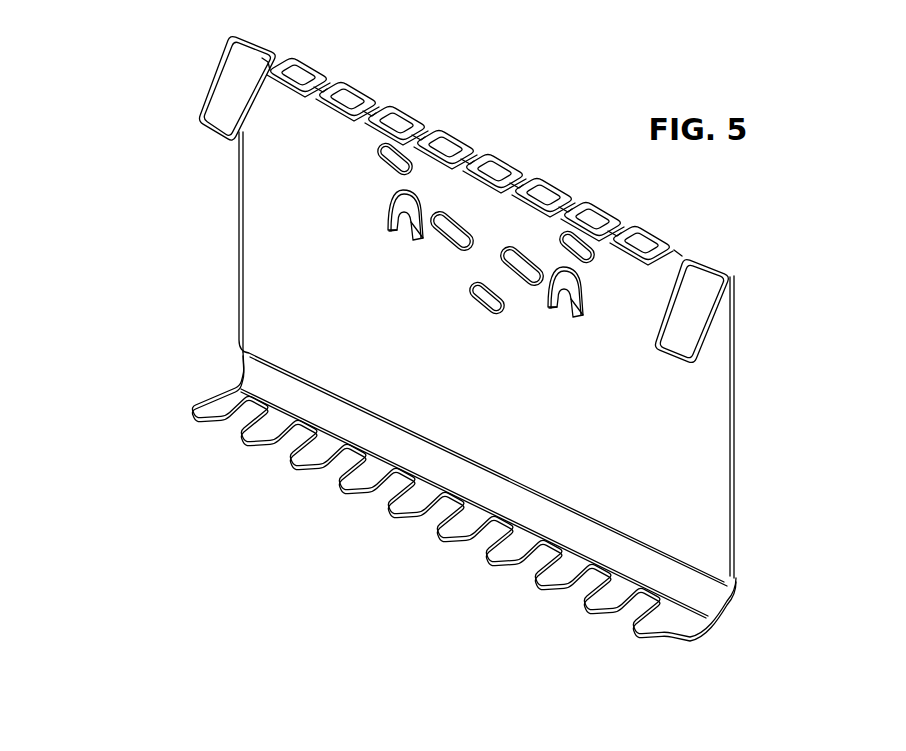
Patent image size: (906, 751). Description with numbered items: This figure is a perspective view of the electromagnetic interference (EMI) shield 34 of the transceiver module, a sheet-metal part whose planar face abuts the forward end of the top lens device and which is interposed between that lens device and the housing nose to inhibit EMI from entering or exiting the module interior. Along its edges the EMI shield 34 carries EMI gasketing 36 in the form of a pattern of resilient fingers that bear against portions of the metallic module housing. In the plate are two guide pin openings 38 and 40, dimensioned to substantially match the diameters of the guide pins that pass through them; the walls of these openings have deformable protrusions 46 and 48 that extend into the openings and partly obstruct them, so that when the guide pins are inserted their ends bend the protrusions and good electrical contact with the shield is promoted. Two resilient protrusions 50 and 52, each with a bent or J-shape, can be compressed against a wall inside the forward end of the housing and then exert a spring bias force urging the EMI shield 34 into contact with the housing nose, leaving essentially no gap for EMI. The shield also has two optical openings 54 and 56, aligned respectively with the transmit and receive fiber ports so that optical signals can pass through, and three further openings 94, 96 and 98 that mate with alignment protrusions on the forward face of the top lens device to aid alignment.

The electromagnetic interference (EMI) shield 34 is at (115, 100).
The EMI gasketing 36 is at (308, 63).
The guide pin opening 38 is at (399, 199).
The guide pin opening 40 is at (573, 275).
The deformable protrusion 46 is at (410, 233).
The deformable protrusion 48 is at (567, 313).
The resilient protrusion 50 is at (217, 72).
The resilient protrusion 52 is at (719, 296).
The optical opening 54 is at (452, 223).
The optical opening 56 is at (515, 255).
The opening 94 is at (573, 238).
The opening 96 is at (478, 305).
The opening 98 is at (392, 153).